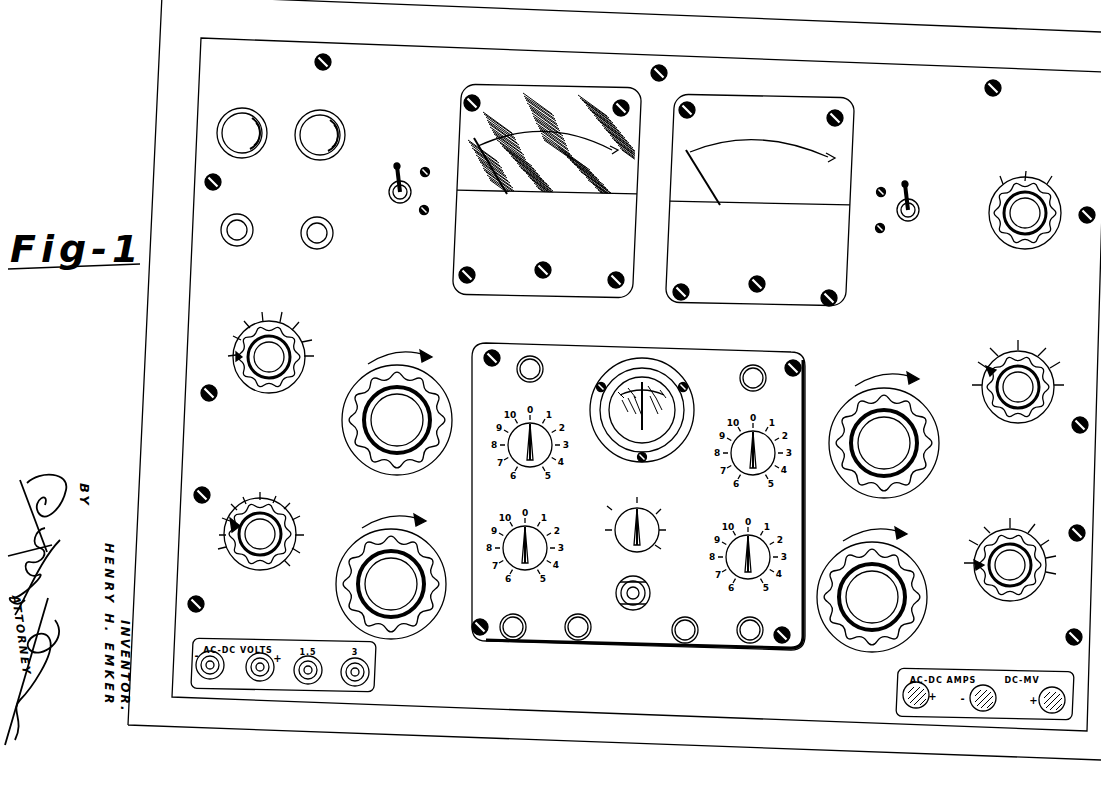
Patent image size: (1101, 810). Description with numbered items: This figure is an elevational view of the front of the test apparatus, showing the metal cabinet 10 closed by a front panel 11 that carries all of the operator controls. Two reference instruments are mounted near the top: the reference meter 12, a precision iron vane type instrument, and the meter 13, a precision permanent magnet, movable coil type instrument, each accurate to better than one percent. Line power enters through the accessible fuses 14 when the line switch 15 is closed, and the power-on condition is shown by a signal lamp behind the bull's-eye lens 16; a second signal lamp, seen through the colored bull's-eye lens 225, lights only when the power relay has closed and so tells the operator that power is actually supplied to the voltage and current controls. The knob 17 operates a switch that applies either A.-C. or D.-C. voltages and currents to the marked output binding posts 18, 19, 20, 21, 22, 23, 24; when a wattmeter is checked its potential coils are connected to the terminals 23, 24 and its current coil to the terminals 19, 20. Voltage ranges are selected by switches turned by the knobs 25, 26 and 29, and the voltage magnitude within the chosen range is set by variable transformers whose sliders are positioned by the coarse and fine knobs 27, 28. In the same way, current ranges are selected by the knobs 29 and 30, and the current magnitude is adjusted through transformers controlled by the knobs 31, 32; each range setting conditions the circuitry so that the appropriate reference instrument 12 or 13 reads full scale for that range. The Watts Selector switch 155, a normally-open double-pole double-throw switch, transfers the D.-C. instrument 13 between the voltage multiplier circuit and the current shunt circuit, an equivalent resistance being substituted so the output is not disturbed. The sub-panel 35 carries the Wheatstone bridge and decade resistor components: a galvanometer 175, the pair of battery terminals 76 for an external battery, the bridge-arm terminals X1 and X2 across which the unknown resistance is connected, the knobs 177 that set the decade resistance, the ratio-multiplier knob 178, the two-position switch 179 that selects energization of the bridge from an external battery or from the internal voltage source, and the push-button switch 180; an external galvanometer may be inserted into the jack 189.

The metal cabinet 10 is at (162, 32).
The front panel 11 is at (208, 67).
The reference meter 12 is at (468, 112).
The reference meter 13 is at (738, 108).
The fuses 14 is at (253, 226).
The line switch 15 is at (388, 180).
The bull's-eye lens 16 is at (217, 133).
The knob 17 is at (992, 235).
The output binding post 18 is at (1052, 714).
The output binding post 19 is at (983, 712).
The output binding post 20 is at (912, 708).
The output binding post 21 is at (356, 687).
The output binding post 22 is at (308, 685).
The output binding post 23 is at (260, 682).
The output binding post 24 is at (209, 680).
The knob 25 is at (236, 368).
The knob 26 is at (233, 576).
The knob 27 is at (342, 438).
The knob 28 is at (356, 540).
The knob 29 is at (1055, 392).
The knob 30 is at (1020, 530).
The knob 31 is at (936, 440).
The knob 32 is at (908, 578).
The sub-panel 35 is at (806, 367).
The external battery terminals 76 is at (685, 643).
The Watts Selector switch 155 is at (920, 204).
The galvanometer 175 is at (627, 358).
The knobs 177 is at (534, 422).
The ratio-multiplier knob 178 is at (648, 514).
The two-position switch 179 is at (531, 359).
The push-button switch 180 is at (751, 368).
The jack 189 is at (618, 588).
The colored bull's-eye lens 225 is at (340, 121).
The bridge-arm terminal X1 is at (513, 640).
The bridge-arm terminal X2 is at (578, 640).